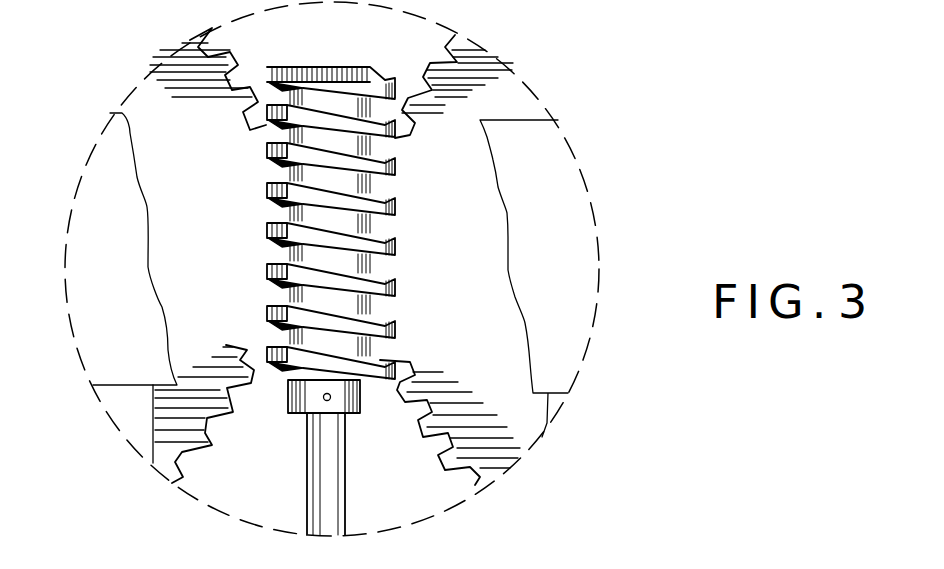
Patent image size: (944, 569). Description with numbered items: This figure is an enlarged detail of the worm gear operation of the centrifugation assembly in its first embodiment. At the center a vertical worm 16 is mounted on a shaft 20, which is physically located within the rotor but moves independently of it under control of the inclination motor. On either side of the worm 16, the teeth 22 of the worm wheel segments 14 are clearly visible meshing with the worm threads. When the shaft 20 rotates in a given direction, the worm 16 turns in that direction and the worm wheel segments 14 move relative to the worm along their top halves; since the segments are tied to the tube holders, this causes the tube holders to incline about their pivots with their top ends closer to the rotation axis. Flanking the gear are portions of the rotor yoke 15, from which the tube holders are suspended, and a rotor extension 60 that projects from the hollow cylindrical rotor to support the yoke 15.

The worm wheel segment 14 is at (138, 93).
The rotor yoke 15 is at (567, 177).
The worm 16 is at (376, 196).
The shaft 20 is at (348, 491).
The teeth 22 is at (400, 150).
The rotor extension 60 is at (127, 413).